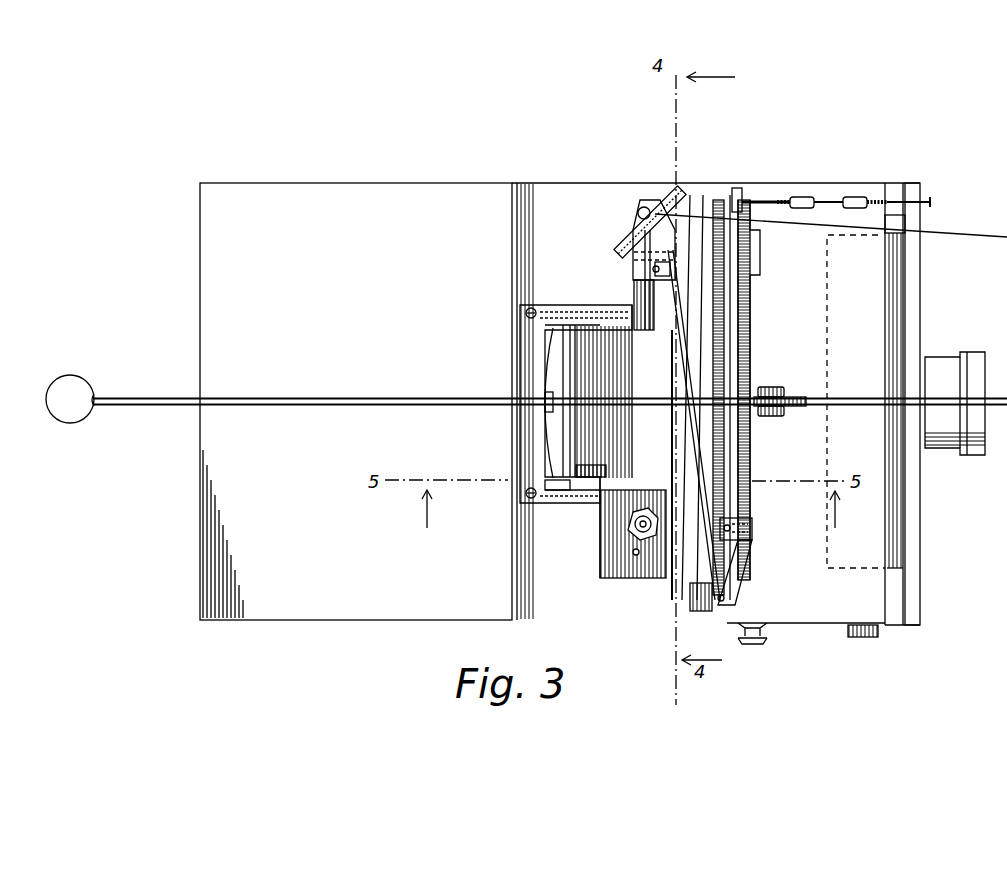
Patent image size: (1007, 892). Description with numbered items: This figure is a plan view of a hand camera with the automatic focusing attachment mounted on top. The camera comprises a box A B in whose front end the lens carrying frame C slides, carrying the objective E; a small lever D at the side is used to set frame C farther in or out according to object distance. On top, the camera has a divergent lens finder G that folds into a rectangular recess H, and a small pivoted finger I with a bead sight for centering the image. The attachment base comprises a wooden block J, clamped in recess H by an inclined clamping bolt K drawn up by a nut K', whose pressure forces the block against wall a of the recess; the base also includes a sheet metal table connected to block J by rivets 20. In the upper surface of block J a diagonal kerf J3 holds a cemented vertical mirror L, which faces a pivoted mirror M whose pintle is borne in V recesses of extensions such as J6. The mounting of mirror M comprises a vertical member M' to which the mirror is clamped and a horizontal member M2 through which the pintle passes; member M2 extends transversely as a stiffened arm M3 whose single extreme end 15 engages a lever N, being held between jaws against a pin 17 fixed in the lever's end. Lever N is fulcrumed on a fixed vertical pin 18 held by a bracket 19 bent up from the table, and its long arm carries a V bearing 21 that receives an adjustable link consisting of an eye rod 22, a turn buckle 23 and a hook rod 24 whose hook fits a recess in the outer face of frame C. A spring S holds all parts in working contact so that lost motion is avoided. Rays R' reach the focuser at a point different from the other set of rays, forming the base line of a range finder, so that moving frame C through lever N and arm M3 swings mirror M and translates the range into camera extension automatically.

The camera box A is at (208, 188).
The camera box B is at (880, 628).
The lens carrying frame C is at (670, 402).
The upright column C' is at (920, 391).
The lever D is at (780, 626).
The objective E is at (946, 352).
The divergent lens finder G is at (518, 360).
The rectangular recess H is at (580, 490).
The finger I is at (768, 388).
The wooden block J is at (590, 325).
The diagonal kerf J3 is at (668, 383).
The extension J6 is at (652, 268).
The inclined clamping bolt K is at (621, 534).
The nut K' is at (645, 559).
The vertical mirror L is at (668, 415).
The pivoted mirror M is at (650, 203).
The vertical member M' is at (638, 184).
The horizontal member M2 is at (636, 240).
The arm M3 is at (702, 318).
The lever N is at (730, 372).
The rays R' is at (831, 213).
The spring S is at (702, 468).
The wall a is at (612, 326).
The extreme end of arm 15 is at (712, 606).
The pin 17 is at (730, 596).
The pin 18 is at (752, 534).
The bracket 19 is at (746, 524).
The rivets 20 is at (650, 272).
The V bearing 21 is at (737, 190).
The eye rod 22 is at (777, 205).
The turn buckle 23 is at (835, 200).
The hook rod 24 is at (897, 198).